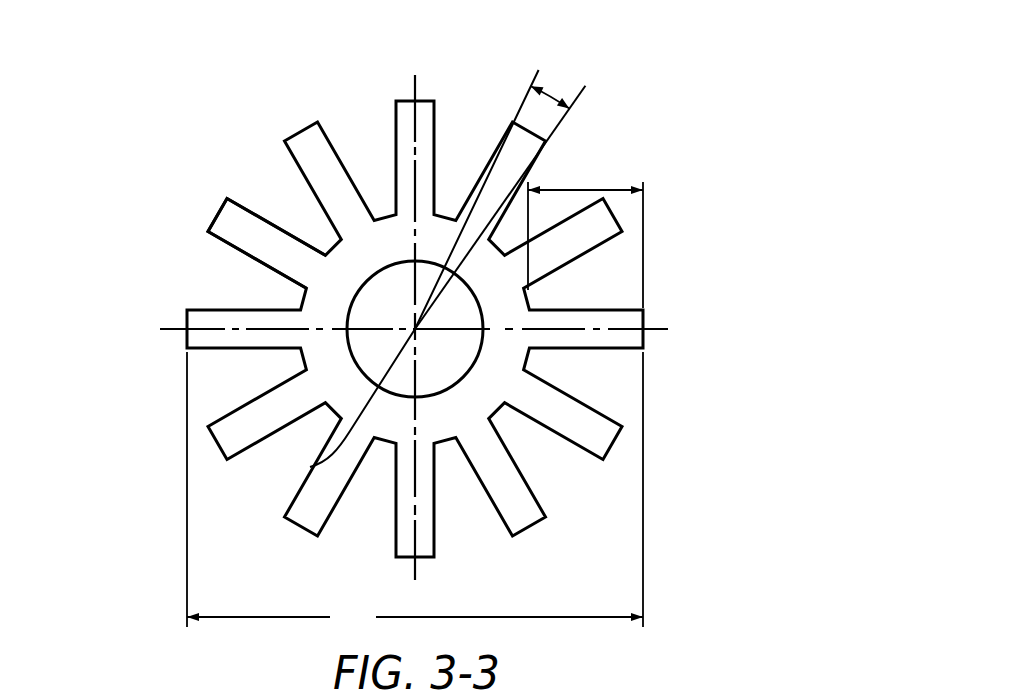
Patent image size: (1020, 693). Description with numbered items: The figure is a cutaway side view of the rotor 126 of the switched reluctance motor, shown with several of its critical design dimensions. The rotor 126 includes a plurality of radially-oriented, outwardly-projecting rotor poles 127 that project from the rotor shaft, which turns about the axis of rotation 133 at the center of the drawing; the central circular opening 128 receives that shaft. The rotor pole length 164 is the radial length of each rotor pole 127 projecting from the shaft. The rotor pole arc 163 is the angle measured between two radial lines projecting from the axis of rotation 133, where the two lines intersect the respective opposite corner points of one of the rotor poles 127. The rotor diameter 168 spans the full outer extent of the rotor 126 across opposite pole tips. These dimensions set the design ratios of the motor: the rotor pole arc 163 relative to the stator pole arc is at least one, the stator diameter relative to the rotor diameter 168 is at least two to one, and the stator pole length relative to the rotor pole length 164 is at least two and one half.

The rotor 126 is at (245, 170).
The rotor poles 127 is at (233, 225).
The central hub opening 128 is at (346, 303).
The axis of rotation 133 is at (310, 466).
The rotor pole arc 163 is at (551, 96).
The rotor pole length 164 is at (605, 185).
The rotor diameter 168 is at (373, 627).